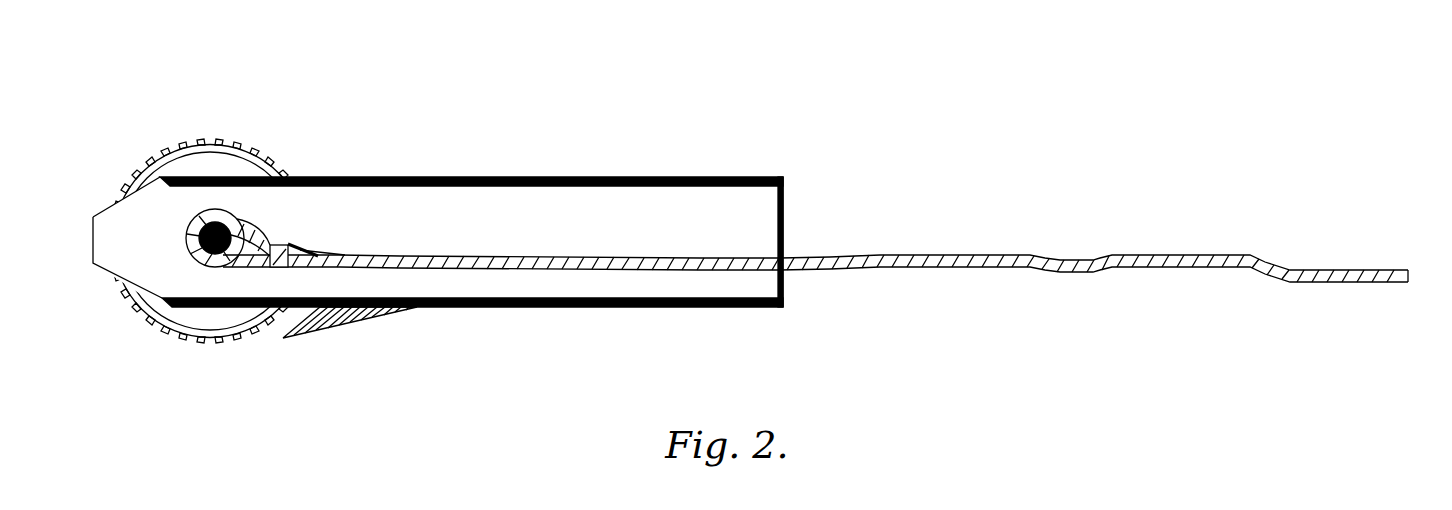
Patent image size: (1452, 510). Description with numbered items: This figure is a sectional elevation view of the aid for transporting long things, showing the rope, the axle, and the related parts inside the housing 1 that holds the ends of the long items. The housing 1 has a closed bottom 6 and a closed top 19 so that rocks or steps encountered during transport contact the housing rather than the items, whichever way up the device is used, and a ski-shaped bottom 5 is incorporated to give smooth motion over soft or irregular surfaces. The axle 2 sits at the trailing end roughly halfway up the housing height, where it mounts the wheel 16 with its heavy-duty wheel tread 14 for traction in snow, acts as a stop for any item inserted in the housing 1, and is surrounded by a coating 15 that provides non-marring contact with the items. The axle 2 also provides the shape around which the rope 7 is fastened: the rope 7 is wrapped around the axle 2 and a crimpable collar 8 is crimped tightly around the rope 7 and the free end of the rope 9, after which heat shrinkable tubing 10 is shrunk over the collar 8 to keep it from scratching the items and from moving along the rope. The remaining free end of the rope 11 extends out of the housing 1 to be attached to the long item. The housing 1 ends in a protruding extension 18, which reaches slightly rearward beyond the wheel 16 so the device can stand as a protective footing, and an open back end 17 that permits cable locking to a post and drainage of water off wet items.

The housing 1 is at (733, 225).
The axle 2 is at (213, 267).
The ski-shaped bottom 5 is at (417, 307).
The closed bottom 6 is at (747, 307).
The rope 7 is at (1065, 272).
The crimpable collar 8 is at (280, 267).
The free end of the rope 9 is at (297, 243).
The heat shrinkable tubing 10 is at (332, 255).
The remaining free end of the rope 11 is at (1355, 282).
The wheel tread 14 is at (268, 148).
The coating 15 is at (223, 262).
The wheel 16 is at (220, 160).
The open back end 17 is at (145, 188).
The protruding extension 18 is at (93, 263).
The closed top 19 is at (735, 177).